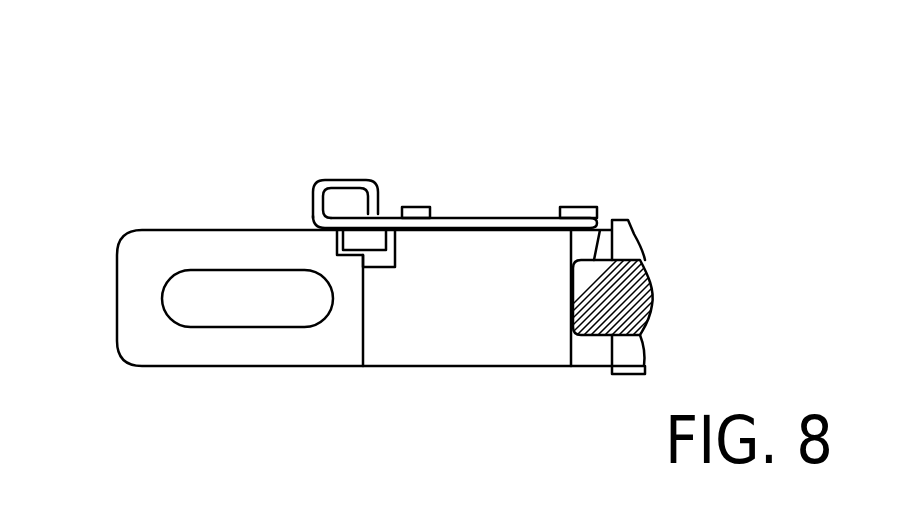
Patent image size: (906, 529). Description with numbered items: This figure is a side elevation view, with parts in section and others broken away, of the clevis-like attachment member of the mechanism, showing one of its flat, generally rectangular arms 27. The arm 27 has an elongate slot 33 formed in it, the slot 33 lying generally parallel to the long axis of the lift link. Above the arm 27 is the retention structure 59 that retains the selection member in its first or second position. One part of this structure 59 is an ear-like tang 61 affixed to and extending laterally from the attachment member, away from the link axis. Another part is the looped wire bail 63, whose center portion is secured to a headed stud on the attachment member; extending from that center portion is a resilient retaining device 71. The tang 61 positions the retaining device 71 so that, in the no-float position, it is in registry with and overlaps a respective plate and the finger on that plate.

The second arm 27 is at (140, 363).
The first slot 33 is at (163, 303).
The retention structure 59 is at (442, 155).
The tang 61 is at (421, 207).
The looped wire bail 63 is at (507, 216).
The second resilient retaining device 71 is at (332, 180).